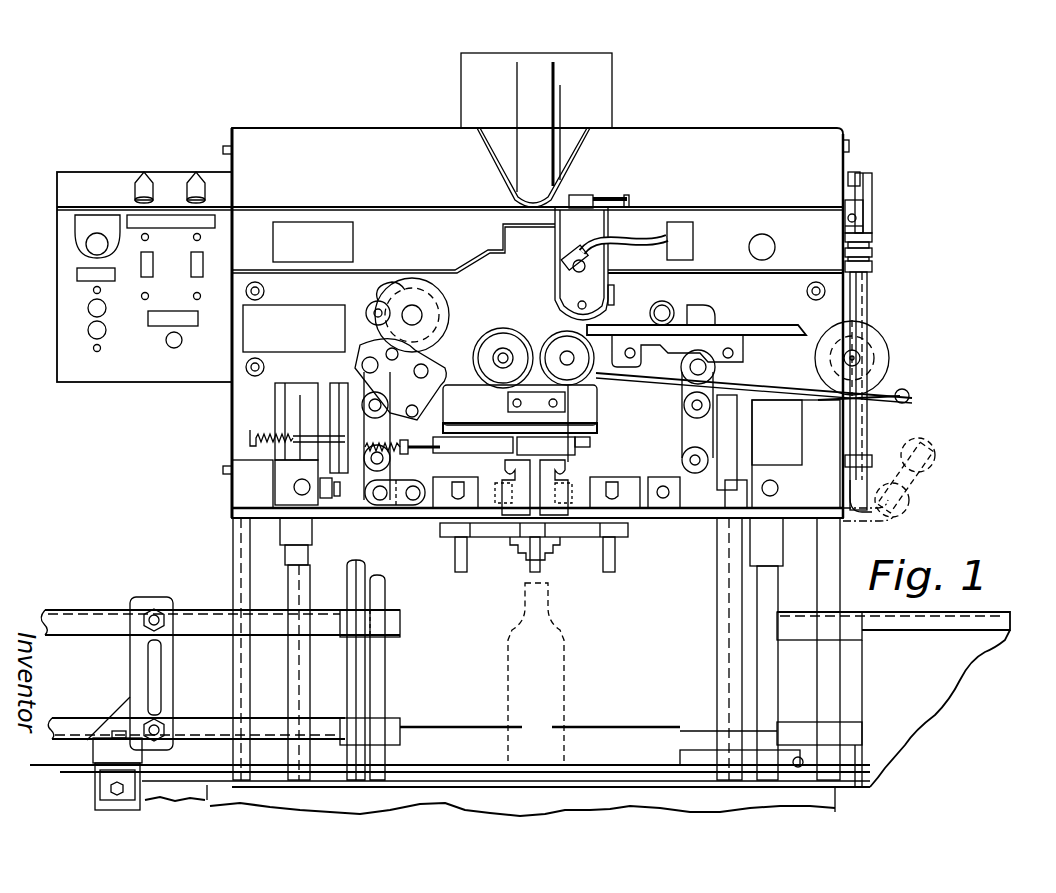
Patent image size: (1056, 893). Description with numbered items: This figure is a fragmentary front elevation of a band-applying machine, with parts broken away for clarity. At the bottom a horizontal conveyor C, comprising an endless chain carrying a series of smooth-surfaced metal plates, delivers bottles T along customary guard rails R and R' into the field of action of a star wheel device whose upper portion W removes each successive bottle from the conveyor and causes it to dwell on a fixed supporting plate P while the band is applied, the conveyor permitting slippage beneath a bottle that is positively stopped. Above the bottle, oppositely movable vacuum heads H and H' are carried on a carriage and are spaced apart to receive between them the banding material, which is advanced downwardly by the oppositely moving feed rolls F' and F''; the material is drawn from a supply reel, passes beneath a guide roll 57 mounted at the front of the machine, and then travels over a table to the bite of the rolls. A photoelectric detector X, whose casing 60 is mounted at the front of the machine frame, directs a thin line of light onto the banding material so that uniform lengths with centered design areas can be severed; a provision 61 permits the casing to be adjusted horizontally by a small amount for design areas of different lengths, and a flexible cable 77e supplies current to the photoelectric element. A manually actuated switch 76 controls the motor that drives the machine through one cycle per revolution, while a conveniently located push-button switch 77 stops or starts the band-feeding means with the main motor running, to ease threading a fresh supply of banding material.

The manually actuated switch 76 is at (74, 328).
The casing 60 is at (560, 272).
The horizontal adjusting provision 61 is at (586, 205).
The flexible cable 77e is at (628, 236).
The push-button switch 77 is at (766, 248).
The photoelectric detector device X is at (614, 293).
The feed roll F' is at (497, 335).
The feed roll F'' is at (552, 331).
The guide roll 57 is at (890, 358).
The vacuum head H' is at (582, 477).
The vacuum head H is at (515, 516).
The star wheel device W is at (520, 563).
The bottle T is at (566, 640).
The fixed supporting plate P is at (606, 765).
The guard rail R is at (525, 595).
The guard rail R' is at (455, 705).
The horizontal conveyor C is at (38, 764).